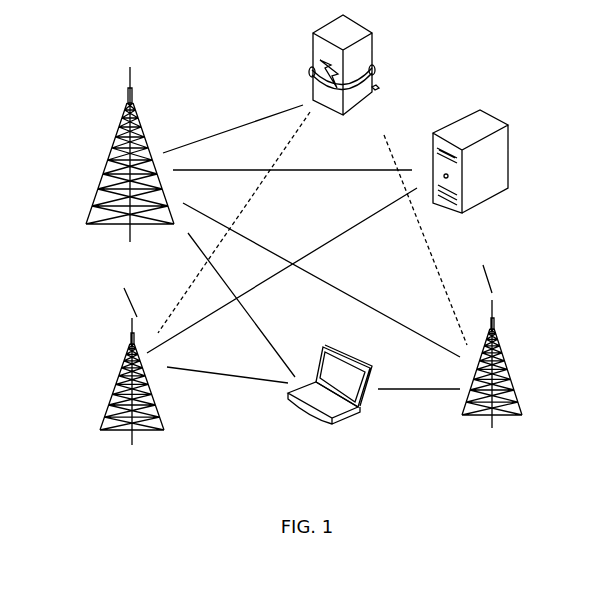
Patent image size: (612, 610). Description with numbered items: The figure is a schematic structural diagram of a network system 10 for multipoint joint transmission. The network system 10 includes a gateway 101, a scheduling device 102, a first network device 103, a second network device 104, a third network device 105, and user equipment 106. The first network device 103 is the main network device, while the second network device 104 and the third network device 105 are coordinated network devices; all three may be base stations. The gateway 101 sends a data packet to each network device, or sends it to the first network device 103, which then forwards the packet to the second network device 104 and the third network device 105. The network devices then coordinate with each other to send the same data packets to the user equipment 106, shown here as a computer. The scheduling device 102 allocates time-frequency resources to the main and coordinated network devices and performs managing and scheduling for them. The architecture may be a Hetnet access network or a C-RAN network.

The network system 10 is at (157, 53).
The gateway 101 is at (377, 48).
The scheduling device 102 is at (453, 105).
The first network device 103 is at (118, 135).
The second network device 104 is at (120, 373).
The third network device 105 is at (502, 342).
The user equipment 106 is at (332, 347).